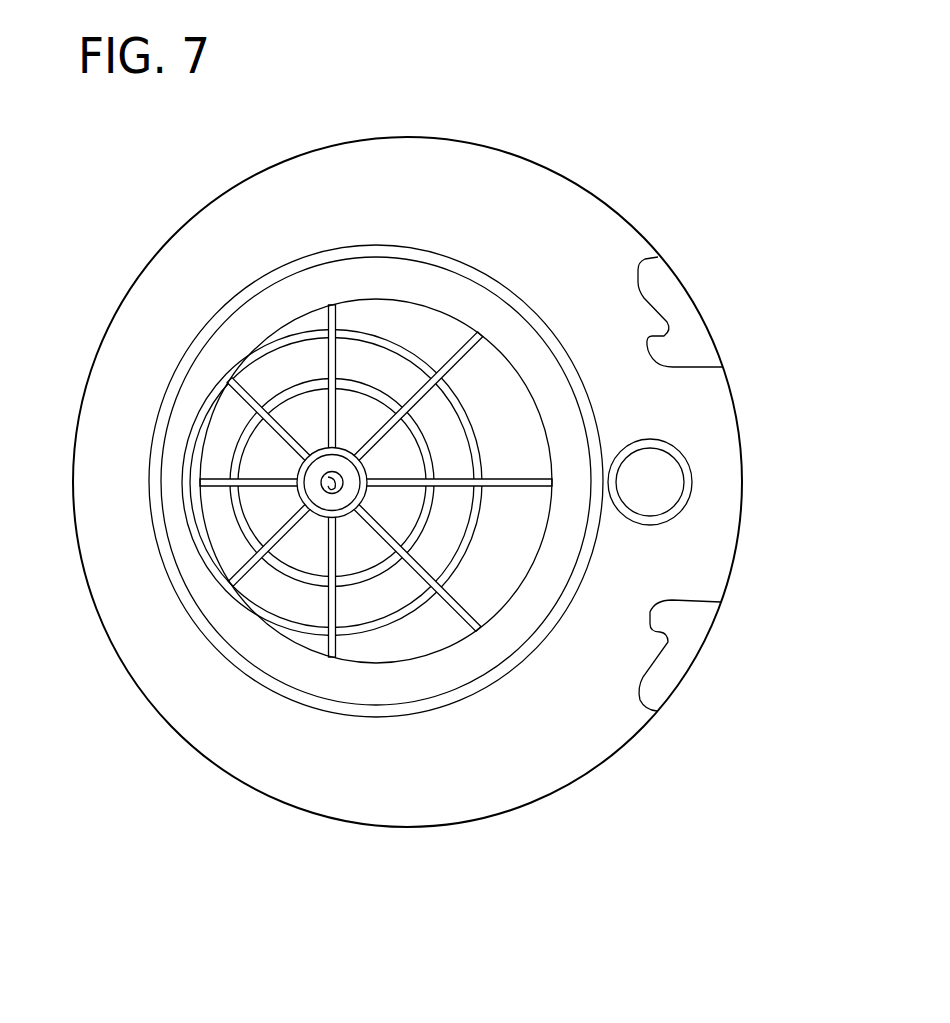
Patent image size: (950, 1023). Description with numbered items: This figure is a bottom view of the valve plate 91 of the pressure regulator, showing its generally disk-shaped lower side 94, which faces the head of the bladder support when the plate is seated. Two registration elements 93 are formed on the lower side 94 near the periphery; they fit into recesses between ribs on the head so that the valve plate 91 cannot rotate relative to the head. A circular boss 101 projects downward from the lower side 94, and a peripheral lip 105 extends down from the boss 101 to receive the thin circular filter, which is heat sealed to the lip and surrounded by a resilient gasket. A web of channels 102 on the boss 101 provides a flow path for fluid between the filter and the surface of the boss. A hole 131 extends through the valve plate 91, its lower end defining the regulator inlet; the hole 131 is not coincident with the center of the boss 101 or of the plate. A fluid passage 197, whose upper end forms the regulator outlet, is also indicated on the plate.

The valve plate 91 is at (357, 828).
The registration elements 93 is at (637, 267).
The lower side 94 is at (540, 768).
The circular boss 101 is at (220, 633).
The web of channels 102 is at (442, 352).
The peripheral lip 105 is at (164, 572).
The hole 131 is at (322, 491).
The fluid passage 197 is at (682, 467).